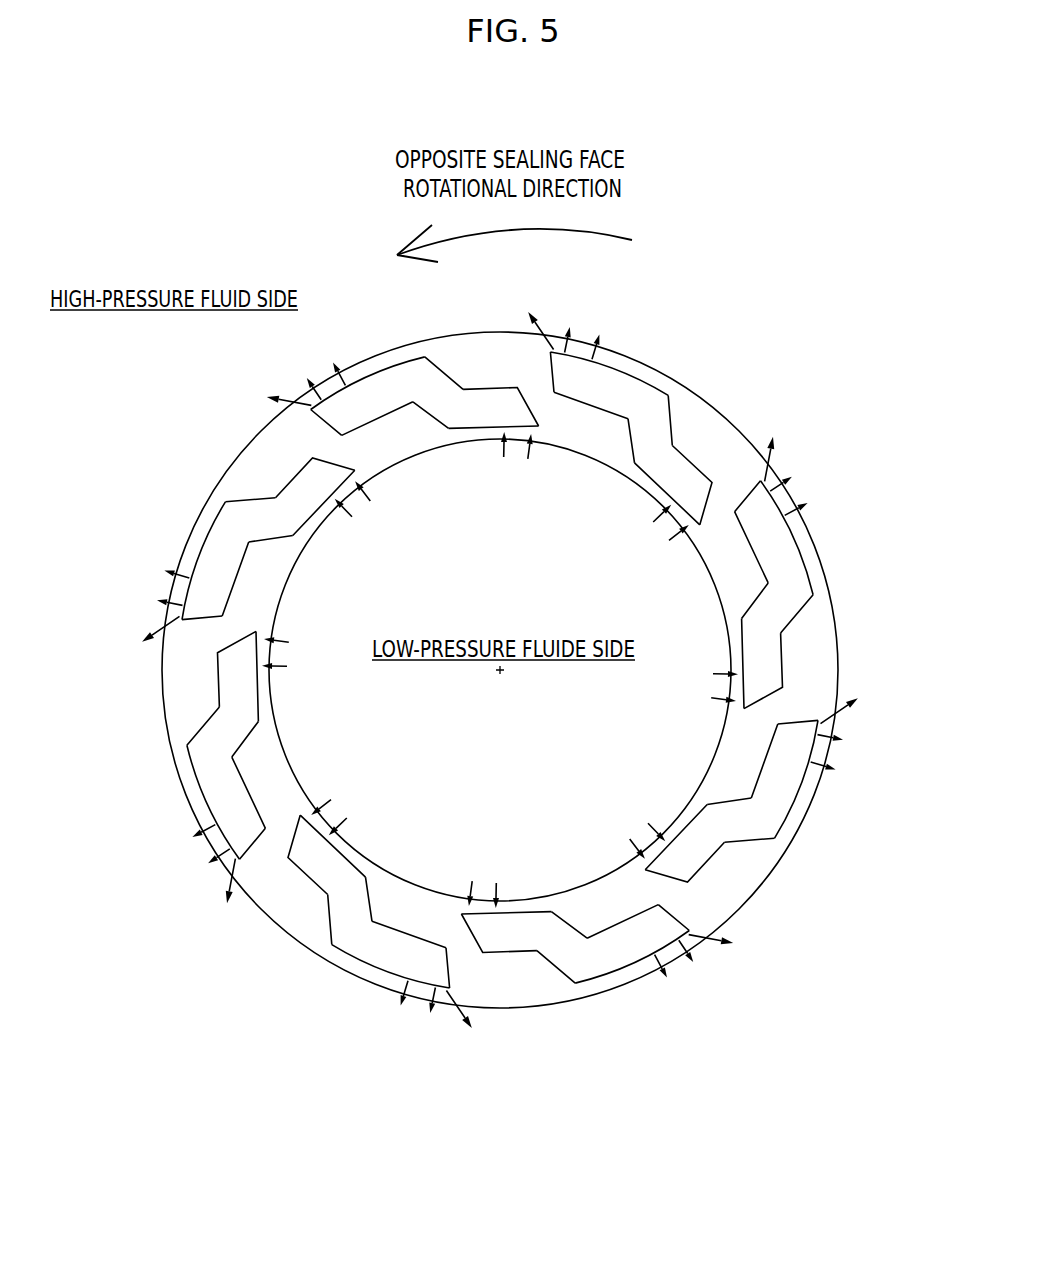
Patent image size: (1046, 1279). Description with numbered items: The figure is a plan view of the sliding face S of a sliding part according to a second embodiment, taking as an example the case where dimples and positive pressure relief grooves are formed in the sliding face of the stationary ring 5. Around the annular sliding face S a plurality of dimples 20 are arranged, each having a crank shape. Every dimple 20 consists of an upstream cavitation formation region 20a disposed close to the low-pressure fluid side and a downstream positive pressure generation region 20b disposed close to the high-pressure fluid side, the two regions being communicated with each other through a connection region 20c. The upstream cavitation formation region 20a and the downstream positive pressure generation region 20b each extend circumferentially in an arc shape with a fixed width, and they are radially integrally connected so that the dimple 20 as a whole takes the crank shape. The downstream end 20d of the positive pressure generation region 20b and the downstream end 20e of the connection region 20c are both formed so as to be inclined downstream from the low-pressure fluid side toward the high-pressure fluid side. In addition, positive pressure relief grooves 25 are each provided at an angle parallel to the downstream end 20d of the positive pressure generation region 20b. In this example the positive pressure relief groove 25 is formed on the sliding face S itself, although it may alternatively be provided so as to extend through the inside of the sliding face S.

The stationary ring 5 is at (662, 367).
The sliding face S is at (722, 450).
The dimple 20 is at (430, 350).
The upstream cavitation formation region 20a is at (493, 412).
The downstream positive pressure generation region 20b is at (360, 385).
The connection region 20c is at (460, 368).
The downstream end of the positive pressure generation region 20d is at (735, 628).
The downstream end of the connection region 20e is at (448, 432).
The positive pressure relief groove 25 is at (297, 390).